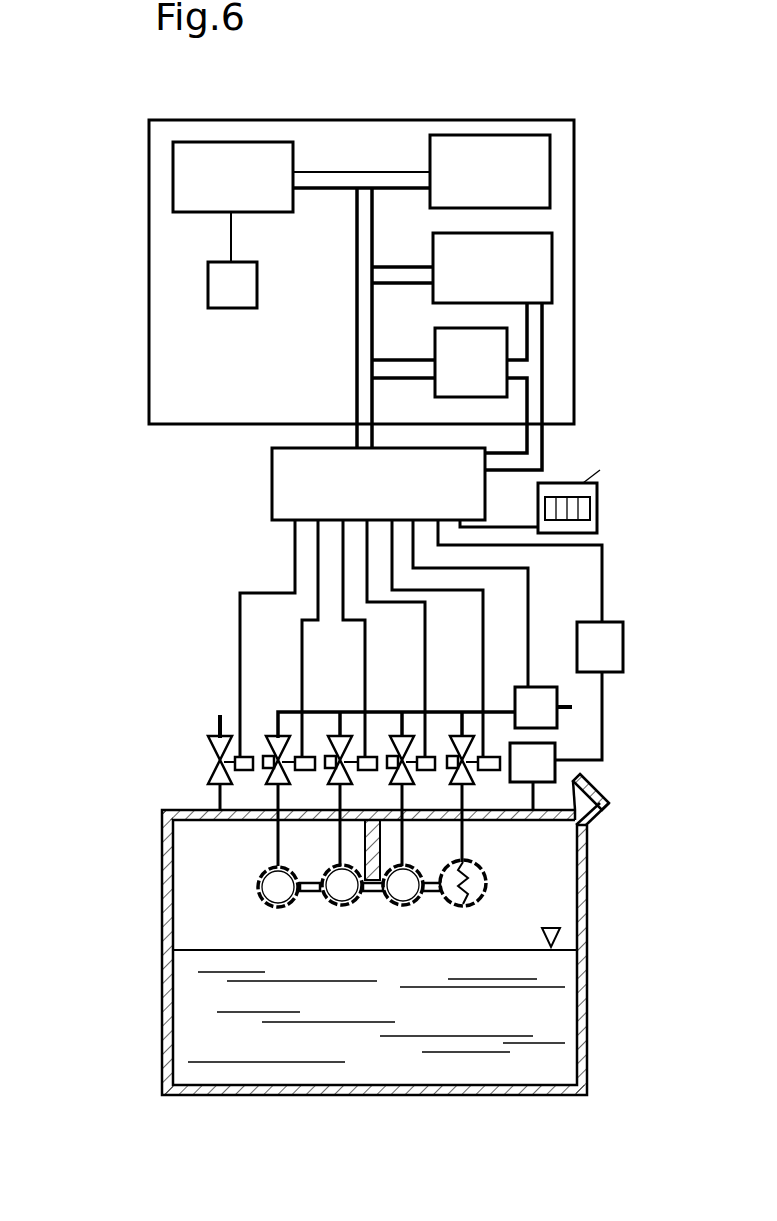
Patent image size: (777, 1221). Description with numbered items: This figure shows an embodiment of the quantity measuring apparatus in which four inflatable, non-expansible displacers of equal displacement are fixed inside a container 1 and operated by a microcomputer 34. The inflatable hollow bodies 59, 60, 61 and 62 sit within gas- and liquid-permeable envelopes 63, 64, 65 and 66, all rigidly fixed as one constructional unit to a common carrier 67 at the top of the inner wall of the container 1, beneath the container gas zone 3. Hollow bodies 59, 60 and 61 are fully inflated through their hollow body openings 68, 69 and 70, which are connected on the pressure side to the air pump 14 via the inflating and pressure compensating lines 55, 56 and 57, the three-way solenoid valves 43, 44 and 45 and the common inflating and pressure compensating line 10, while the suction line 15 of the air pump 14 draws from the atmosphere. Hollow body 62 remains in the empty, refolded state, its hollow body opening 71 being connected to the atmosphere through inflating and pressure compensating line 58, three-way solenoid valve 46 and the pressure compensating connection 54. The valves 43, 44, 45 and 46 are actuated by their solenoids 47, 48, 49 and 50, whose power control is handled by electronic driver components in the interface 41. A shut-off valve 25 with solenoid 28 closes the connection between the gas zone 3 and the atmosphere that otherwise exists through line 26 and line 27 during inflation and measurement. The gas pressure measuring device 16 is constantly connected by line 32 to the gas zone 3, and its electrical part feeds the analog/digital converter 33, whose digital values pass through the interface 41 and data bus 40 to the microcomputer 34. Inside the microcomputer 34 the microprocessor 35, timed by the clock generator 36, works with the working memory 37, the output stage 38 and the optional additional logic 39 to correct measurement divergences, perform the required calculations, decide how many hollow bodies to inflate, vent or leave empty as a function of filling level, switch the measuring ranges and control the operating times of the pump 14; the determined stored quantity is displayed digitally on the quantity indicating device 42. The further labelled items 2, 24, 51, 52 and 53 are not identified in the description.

The container 1 is at (588, 903).
The liquid 2 is at (560, 1000).
The container gas zone 3 is at (560, 923).
The common inflating and pressure compensating line 10 is at (522, 658).
The air pump 14 is at (557, 692).
The suction line 15 is at (572, 705).
The gas pressure measuring device 16 is at (555, 750).
The outlet pipe 24 is at (610, 798).
The shut-off valve 25 is at (217, 770).
The line 26 is at (217, 800).
The line 27 is at (216, 723).
The solenoid 28 is at (244, 757).
The line 32 is at (585, 781).
The analog/digital converter 33 is at (623, 630).
The microcomputer 34 is at (574, 325).
The microprocessor 35 is at (173, 188).
The clock generator 36 is at (208, 286).
The working memory 37 is at (550, 172).
The output stage 38 is at (552, 272).
The additional logic 39 is at (507, 386).
The data bus 40 is at (358, 400).
The interface 41 is at (272, 502).
The quantity indicating device 42 is at (597, 488).
The three-way solenoid valve 43 is at (238, 703).
The three-way solenoid valve 44 is at (268, 673).
The three-way solenoid valve 45 is at (515, 651).
The three-way solenoid valve 46 is at (575, 664).
The solenoid 47 is at (252, 683).
The solenoid 48 is at (307, 652).
The solenoid 49 is at (582, 653).
The solenoid 50 is at (616, 661).
The valve connection 51 is at (263, 763).
The supply pipe 52 is at (338, 793).
The converter line 53 is at (598, 817).
The pressure compensating connection 54 is at (605, 763).
The inflating and pressure compensating line 55 is at (337, 834).
The inflating and pressure compensating line 56 is at (337, 843).
The inflating and pressure compensating line 57 is at (408, 840).
The inflating and pressure compensating line 58 is at (470, 830).
The inflatable hollow body 59 is at (258, 882).
The inflatable hollow body 60 is at (231, 938).
The inflatable hollow body 61 is at (258, 961).
The inflatable hollow body 62 is at (586, 887).
The envelope 63 is at (266, 904).
The envelope 64 is at (348, 907).
The envelope 65 is at (417, 907).
The envelope 66 is at (462, 905).
The common carrier 67 is at (480, 862).
The hollow body opening 68 is at (322, 855).
The hollow body opening 69 is at (310, 862).
The hollow body opening 70 is at (251, 913).
The hollow body opening 71 is at (445, 852).